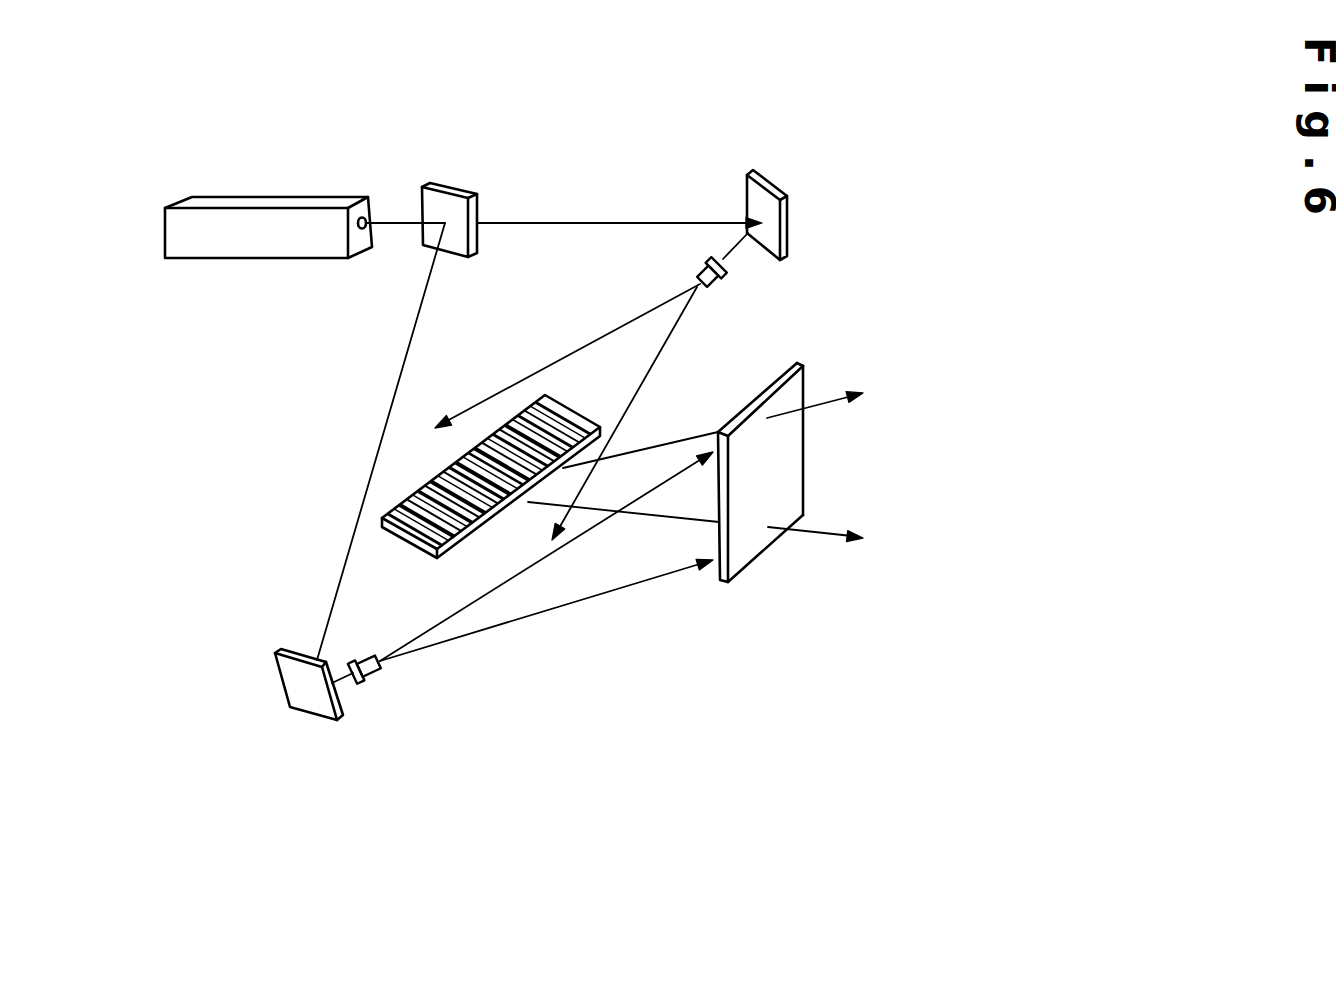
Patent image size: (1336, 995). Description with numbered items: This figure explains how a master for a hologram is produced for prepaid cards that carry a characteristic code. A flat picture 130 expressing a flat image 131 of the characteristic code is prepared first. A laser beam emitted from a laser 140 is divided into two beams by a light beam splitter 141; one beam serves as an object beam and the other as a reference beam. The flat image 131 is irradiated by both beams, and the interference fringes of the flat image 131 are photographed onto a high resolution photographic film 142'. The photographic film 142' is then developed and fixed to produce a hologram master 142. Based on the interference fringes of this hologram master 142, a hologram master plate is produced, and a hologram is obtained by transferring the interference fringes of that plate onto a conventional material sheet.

The laser 140 is at (240, 200).
The light beam splitter 141 is at (450, 187).
The flat picture 130 is at (410, 540).
The flat image 131 is at (447, 468).
The hologram master 142 is at (863, 489).
The photographic film 142' is at (878, 439).